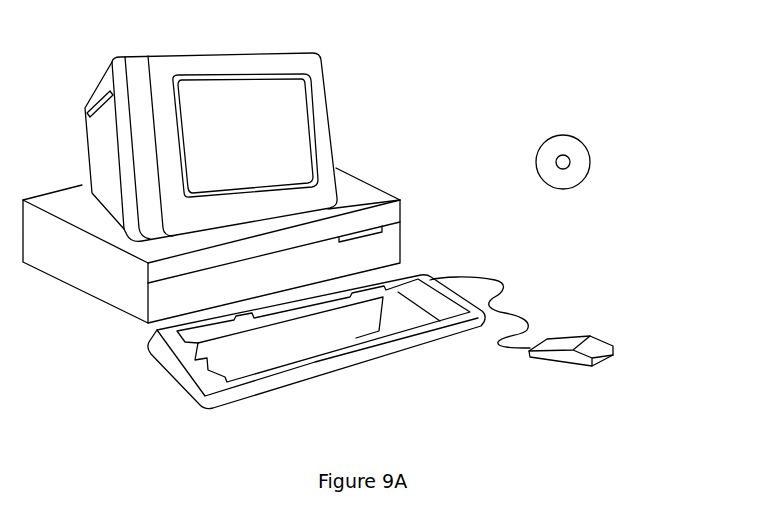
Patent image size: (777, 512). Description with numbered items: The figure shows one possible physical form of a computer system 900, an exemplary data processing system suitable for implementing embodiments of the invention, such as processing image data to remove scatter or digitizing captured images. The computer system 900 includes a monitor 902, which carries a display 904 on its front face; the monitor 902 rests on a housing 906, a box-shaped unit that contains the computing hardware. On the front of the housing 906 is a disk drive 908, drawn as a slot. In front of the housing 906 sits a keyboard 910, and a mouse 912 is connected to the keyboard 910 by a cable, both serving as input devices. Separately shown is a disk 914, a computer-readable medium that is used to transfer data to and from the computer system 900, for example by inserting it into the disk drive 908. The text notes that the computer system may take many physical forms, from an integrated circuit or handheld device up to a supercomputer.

The computer system 900 is at (504, 32).
The monitor 902 is at (333, 140).
The display 904 is at (300, 104).
The housing 906 is at (120, 311).
The disk drive 908 is at (382, 226).
The keyboard 910 is at (318, 375).
The mouse 912 is at (600, 334).
The disk 914 is at (578, 134).